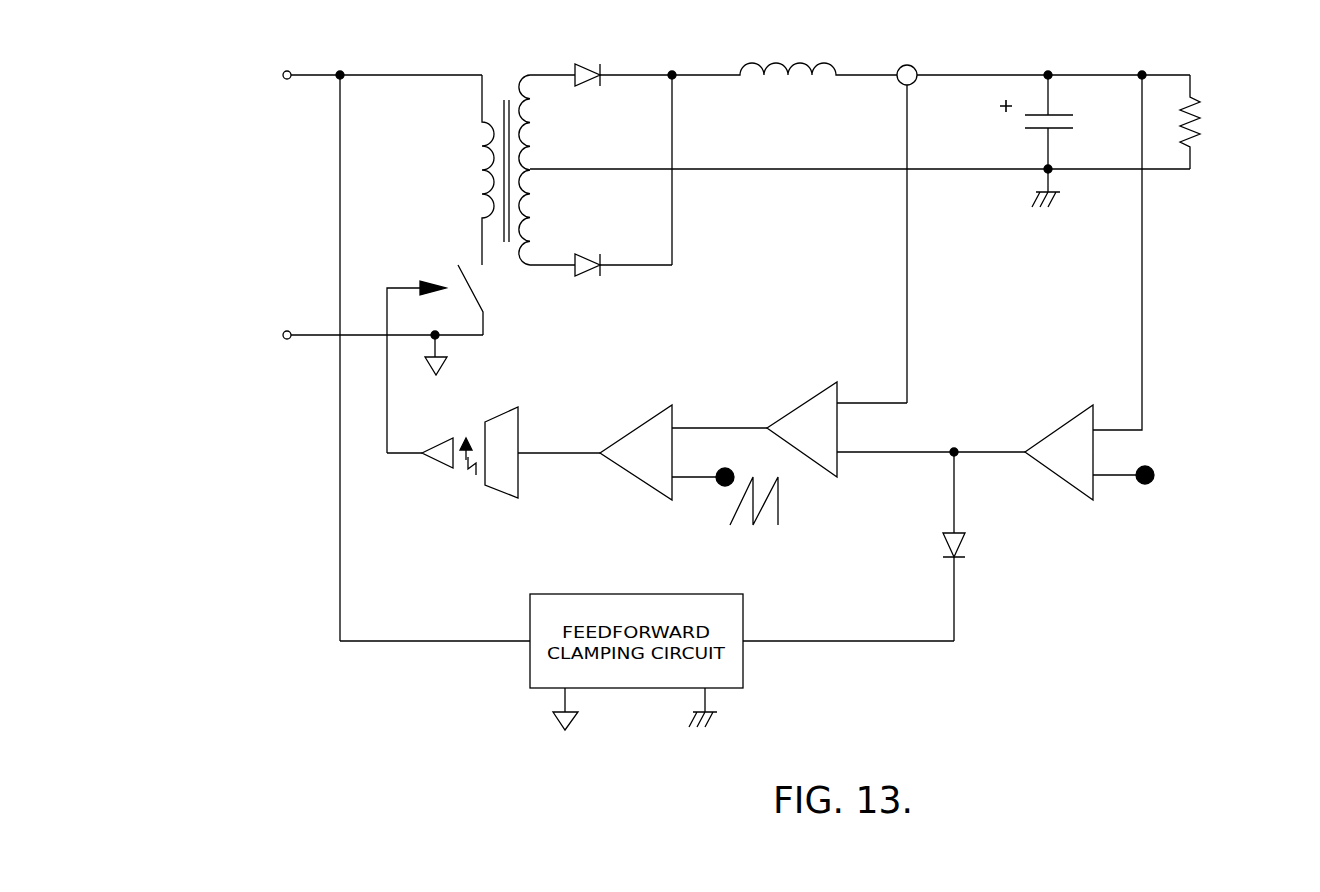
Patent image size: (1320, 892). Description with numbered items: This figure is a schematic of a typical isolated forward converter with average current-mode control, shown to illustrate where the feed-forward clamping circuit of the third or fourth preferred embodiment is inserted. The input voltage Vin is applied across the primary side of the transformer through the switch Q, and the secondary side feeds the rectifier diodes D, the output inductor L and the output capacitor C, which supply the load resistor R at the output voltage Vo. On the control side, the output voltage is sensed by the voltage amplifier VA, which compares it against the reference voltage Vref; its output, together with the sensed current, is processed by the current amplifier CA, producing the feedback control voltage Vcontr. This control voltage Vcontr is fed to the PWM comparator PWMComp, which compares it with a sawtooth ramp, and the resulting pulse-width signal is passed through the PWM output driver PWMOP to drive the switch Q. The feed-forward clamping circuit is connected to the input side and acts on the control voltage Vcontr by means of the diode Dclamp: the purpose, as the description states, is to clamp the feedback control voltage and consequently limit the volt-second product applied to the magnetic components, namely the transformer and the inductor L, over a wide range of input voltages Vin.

The input voltage Vin is at (270, 100).
The switching transistor Q is at (484, 300).
The rectifier diodes D is at (623, 153).
The output inductor L is at (784, 54).
The output capacitor C is at (1051, 122).
The load resistor R is at (1202, 122).
The output voltage Vo is at (1238, 75).
The PWM output driver PWMOP is at (493, 466).
The PWM comparator PWMComp is at (670, 448).
The current amplifier CA is at (895, 423).
The control voltage Vcontr is at (908, 467).
The voltage amplifier VA is at (1077, 287).
The reference voltage Vref is at (1172, 476).
The diode Dclamp is at (1002, 546).